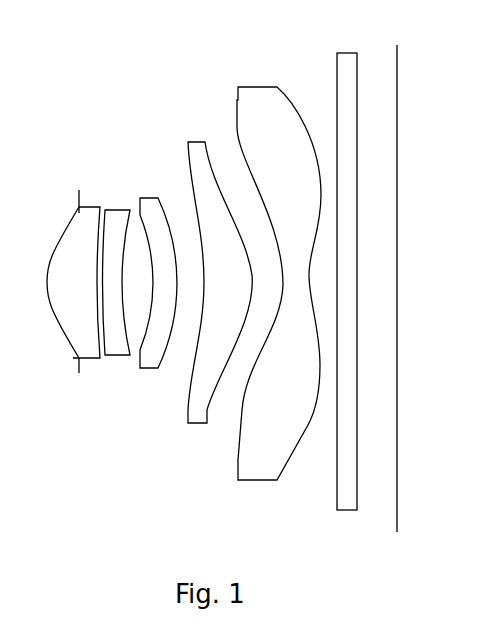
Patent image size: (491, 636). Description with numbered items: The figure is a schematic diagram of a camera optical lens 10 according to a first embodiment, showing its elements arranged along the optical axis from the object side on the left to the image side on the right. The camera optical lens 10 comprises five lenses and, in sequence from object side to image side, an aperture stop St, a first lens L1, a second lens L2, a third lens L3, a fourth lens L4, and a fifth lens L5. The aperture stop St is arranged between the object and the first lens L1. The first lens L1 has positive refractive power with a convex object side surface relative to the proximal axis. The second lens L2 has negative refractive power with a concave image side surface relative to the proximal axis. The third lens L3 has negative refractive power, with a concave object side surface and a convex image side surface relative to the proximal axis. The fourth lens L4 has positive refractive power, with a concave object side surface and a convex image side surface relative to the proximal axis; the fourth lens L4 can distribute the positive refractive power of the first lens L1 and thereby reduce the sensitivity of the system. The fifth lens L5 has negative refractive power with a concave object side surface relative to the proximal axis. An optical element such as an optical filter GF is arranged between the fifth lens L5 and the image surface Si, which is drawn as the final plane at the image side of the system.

The camera optical lens 10 is at (182, 65).
The aperture stop St is at (73, 271).
The first lens L1 is at (75, 274).
The second lens L2 is at (117, 269).
The third lens L3 is at (158, 273).
The fourth lens L4 is at (219, 274).
The fifth lens L5 is at (279, 268).
The optical filter GF is at (348, 265).
The image surface Si is at (398, 276).